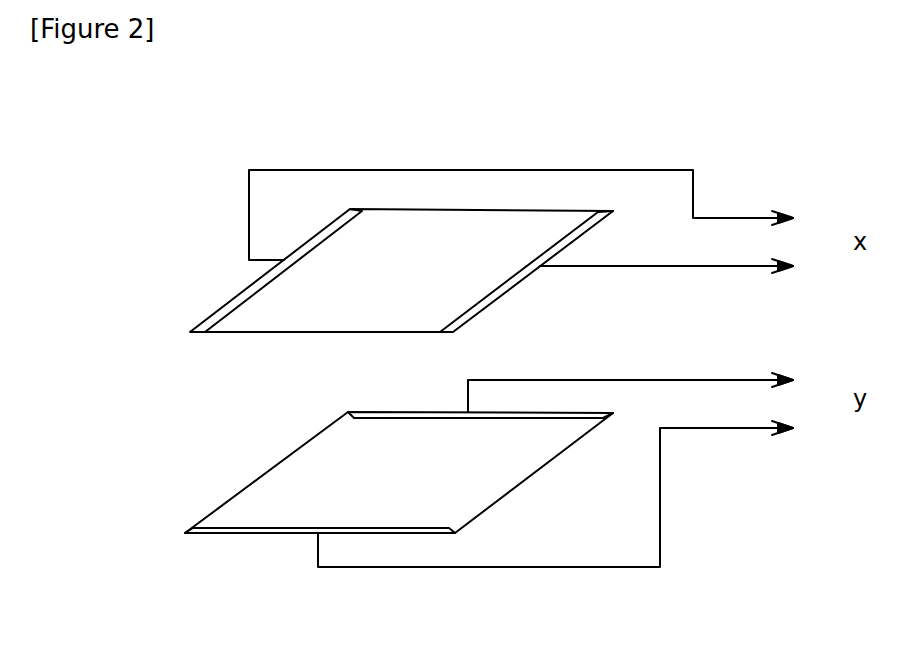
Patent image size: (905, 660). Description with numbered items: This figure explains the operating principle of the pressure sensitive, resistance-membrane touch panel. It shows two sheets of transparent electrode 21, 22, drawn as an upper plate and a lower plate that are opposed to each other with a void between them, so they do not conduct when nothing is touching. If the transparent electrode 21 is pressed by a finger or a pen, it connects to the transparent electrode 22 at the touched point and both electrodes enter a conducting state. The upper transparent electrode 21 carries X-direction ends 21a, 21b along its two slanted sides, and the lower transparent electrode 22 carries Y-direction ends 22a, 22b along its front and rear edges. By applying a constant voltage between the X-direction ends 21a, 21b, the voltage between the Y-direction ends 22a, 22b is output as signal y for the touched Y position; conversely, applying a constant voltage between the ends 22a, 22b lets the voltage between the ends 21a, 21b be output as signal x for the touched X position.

The transparent electrode 21 is at (245, 332).
The X-direction end of transparent electrode 21a is at (236, 292).
The X-direction end of transparent electrode 21b is at (486, 312).
The transparent electrode 22 is at (481, 515).
The Y-direction end of transparent electrode 22a is at (245, 533).
The Y-direction end of transparent electrode 22b is at (415, 412).